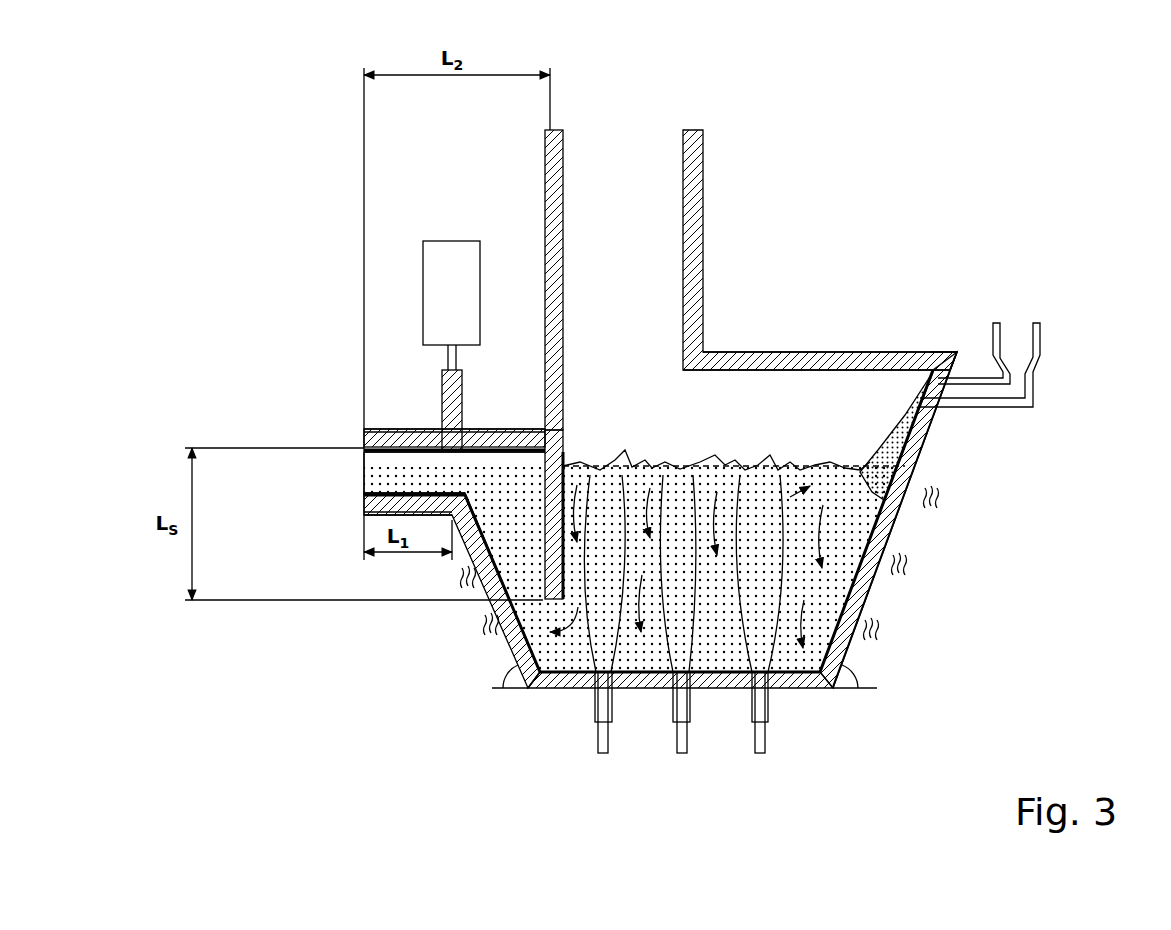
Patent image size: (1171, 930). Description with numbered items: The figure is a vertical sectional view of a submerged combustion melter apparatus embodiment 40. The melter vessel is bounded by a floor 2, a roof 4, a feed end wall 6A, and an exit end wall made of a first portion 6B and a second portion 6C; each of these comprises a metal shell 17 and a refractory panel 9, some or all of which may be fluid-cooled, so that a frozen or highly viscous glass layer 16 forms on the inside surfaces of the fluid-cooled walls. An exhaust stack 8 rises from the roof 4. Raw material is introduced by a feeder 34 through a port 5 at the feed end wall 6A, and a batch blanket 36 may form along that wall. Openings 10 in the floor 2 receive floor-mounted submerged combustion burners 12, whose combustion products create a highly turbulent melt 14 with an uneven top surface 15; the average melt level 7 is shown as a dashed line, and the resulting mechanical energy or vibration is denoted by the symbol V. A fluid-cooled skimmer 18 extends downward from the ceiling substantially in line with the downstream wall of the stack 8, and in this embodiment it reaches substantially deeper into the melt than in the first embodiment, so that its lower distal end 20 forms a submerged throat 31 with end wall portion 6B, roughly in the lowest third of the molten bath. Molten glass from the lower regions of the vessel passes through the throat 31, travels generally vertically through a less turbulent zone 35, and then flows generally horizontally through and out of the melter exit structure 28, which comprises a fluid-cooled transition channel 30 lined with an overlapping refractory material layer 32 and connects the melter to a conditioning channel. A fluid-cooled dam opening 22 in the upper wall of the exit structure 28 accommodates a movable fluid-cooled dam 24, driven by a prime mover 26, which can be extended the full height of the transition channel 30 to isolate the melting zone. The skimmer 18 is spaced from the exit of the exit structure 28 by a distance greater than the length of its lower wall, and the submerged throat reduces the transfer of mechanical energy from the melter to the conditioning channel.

The floor 2 is at (640, 690).
The roof 4 is at (755, 352).
The port 5 is at (925, 352).
The feed end wall 6A is at (882, 525).
The first portion of exit end wall 6B is at (513, 653).
The second portion of exit end wall 6C is at (565, 405).
The average level 7 is at (755, 465).
The exhaust stack 8 is at (703, 185).
The refractory panel 9 is at (364, 445).
The openings 10 is at (596, 705).
The submerged combustion burners 12 is at (598, 745).
The highly turbulent melt 14 is at (905, 467).
The uneven top surface 15 is at (712, 460).
The frozen or highly viscous glass layer 16 is at (398, 493).
The metal shell 17 is at (363, 441).
The fluid-cooled skimmer 18 is at (575, 470).
The lower distal end 20 is at (535, 690).
The fluid-cooled dam opening 22 is at (442, 430).
The fluid-cooled dam 24 is at (442, 380).
The prime mover 26 is at (450, 240).
The melter exit structure 28 is at (338, 545).
The fluid-cooled transition channel 30 is at (390, 429).
The throat 31 is at (482, 622).
The overlapping refractory material layer 32 is at (364, 452).
The feeder 34 is at (1045, 338).
The less turbulent zone 35 is at (458, 575).
The batch blanket 36 is at (913, 423).
The melter apparatus embodiment 40 is at (1020, 112).
The vibration V is at (940, 495).